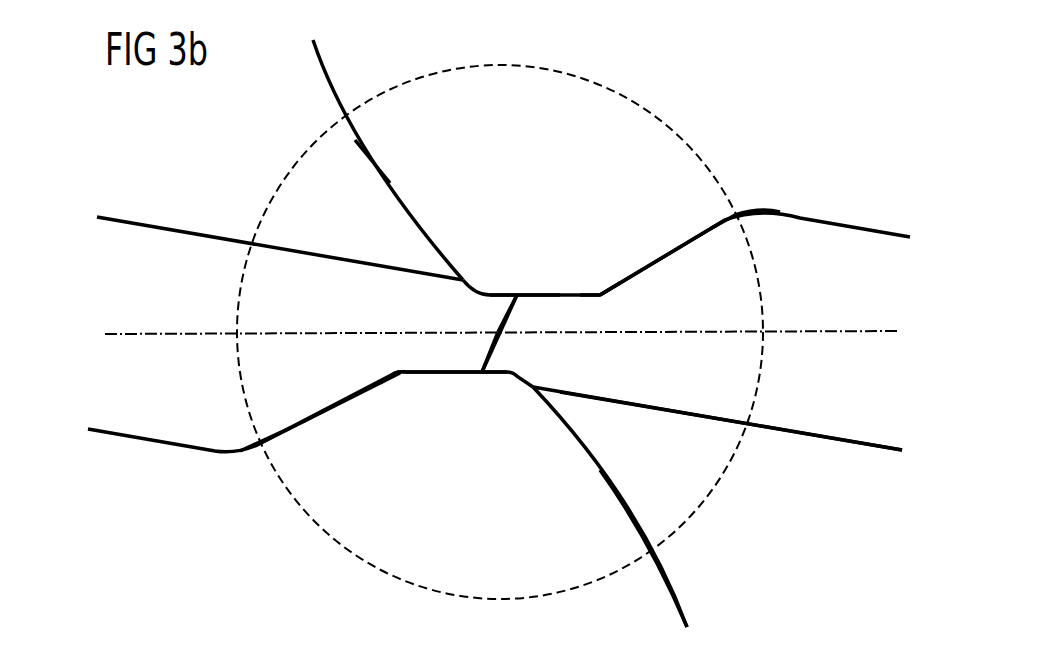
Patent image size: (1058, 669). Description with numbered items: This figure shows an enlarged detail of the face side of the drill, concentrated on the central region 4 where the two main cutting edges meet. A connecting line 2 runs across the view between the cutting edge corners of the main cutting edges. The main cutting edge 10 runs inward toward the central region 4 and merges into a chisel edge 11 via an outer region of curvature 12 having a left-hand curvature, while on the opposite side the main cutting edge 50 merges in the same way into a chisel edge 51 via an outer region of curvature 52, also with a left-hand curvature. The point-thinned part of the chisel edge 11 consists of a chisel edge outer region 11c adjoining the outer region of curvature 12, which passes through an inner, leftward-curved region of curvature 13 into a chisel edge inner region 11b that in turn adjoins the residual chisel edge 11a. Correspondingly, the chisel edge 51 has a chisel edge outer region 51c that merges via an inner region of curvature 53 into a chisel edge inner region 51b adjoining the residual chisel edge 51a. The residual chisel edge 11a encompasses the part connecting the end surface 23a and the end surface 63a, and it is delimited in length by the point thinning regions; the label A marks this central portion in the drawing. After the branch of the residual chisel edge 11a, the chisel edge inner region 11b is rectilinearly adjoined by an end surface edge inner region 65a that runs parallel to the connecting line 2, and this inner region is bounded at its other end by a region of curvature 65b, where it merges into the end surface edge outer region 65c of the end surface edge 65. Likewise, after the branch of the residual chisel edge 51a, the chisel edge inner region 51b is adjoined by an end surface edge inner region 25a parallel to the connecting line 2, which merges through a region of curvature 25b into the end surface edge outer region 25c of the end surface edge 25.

The connecting line 2 is at (822, 331).
The central region 4 is at (663, 120).
The main cutting edge 10 is at (838, 225).
The chisel edge 11 is at (562, 293).
The residual chisel edge 11a is at (510, 312).
The chisel edge inner region 11b is at (538, 293).
The chisel edge outer region 11c is at (663, 257).
The outer region of curvature 12 is at (732, 216).
The inner region of curvature 13 is at (598, 292).
The end surface 23a is at (827, 388).
The end surface edge 25 is at (673, 592).
The end surface edge inner region 25a is at (497, 374).
The region of curvature 25b is at (518, 378).
The end surface edge outer region 25c is at (628, 507).
The main cutting edge 50 is at (158, 442).
The chisel edge 51 is at (357, 398).
The residual chisel edge 51a is at (494, 352).
The chisel edge inner region 51b is at (452, 375).
The chisel edge outer region 51c is at (337, 412).
The outer region of curvature 52 is at (268, 450).
The inner region of curvature 53 is at (400, 375).
The end surface 63a is at (165, 283).
The end surface edge 65 is at (326, 72).
The end surface edge inner region 65a is at (497, 292).
The region of curvature 65b is at (480, 290).
The end surface edge outer region 65c is at (367, 153).
The contact line A is at (497, 330).